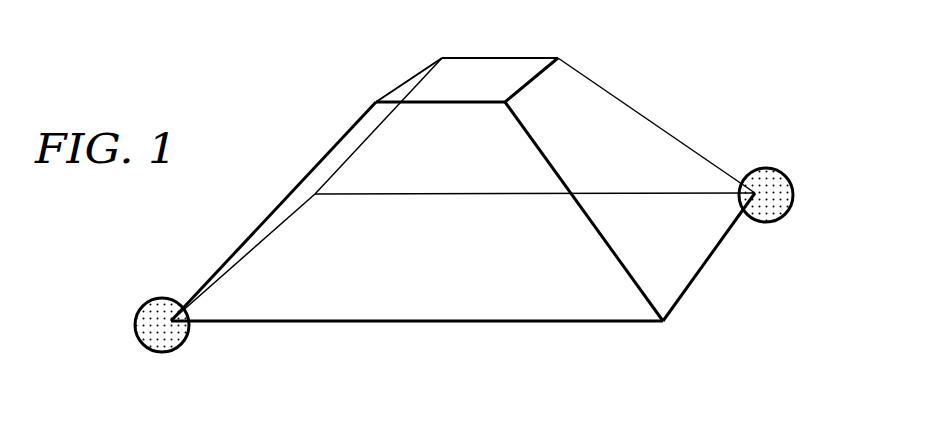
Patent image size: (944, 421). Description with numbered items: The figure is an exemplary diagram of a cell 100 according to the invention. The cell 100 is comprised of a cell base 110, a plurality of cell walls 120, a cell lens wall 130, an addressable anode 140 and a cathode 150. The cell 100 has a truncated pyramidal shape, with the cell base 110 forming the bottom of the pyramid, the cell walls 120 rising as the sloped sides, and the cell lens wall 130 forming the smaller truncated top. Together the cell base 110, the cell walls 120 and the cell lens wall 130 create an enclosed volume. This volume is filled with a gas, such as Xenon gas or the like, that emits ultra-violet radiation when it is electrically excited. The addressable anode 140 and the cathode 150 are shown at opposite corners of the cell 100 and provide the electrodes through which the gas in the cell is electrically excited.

The cell 100 is at (318, 66).
The cell base 110 is at (426, 313).
The cell walls 120 is at (580, 97).
The cell lens wall 130 is at (483, 68).
The addressable anode 140 is at (795, 190).
The cathode 150 is at (133, 328).